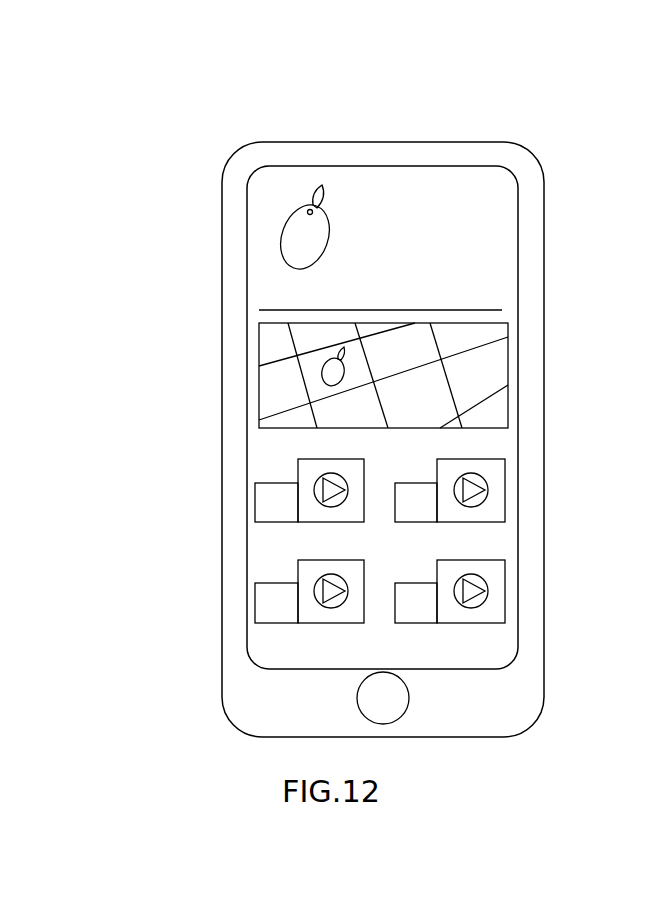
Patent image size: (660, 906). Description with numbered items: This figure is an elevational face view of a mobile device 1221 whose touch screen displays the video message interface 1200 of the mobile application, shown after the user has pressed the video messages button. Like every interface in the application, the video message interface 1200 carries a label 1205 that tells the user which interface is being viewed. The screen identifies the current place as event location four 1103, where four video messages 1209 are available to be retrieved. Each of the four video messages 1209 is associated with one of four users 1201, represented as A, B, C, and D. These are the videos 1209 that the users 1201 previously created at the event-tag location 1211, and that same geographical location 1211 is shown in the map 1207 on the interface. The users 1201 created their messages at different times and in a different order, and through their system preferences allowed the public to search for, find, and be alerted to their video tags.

The video message interface 1200 is at (220, 135).
The mobile device 1221 is at (470, 140).
The event location 4 1103 is at (512, 232).
The label 1205 is at (502, 292).
The map 1207 is at (498, 385).
The event-tag location 1211 is at (330, 360).
The users 1201 is at (413, 583).
The video messages 1209 is at (348, 622).